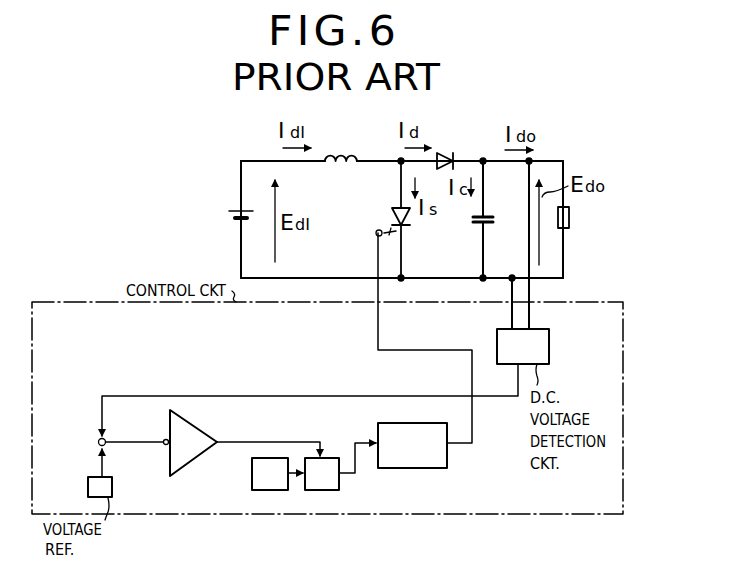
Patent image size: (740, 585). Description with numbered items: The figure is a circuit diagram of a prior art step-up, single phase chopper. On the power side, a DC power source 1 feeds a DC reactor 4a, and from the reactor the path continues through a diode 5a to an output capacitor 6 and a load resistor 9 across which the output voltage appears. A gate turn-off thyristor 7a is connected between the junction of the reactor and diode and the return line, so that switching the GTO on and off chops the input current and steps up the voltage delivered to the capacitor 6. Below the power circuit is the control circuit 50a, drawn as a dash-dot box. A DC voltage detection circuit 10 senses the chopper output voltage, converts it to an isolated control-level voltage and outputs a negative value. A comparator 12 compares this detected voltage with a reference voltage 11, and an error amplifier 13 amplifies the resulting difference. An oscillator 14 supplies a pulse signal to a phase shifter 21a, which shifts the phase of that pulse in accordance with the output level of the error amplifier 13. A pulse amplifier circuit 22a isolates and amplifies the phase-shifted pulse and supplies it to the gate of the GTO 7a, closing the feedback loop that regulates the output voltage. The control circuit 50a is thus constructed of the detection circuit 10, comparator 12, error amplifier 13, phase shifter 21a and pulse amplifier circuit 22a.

The DC power source 1 is at (229, 212).
The DC reactor 4a is at (330, 155).
The diode 5a is at (439, 152).
The capacitor 6 is at (493, 221).
The gate turn-off thyristor 7a is at (390, 217).
The load resistor 9 is at (569, 221).
The DC voltage detection circuit 10 is at (549, 342).
The reference voltage 11 is at (112, 486).
The comparator 12 is at (106, 440).
The error amplifier 13 is at (205, 415).
The oscillator 14 is at (252, 472).
The phase shifter 21a is at (339, 482).
The pulse amplifier circuit 22a is at (447, 462).
The control circuit 50a is at (77, 302).